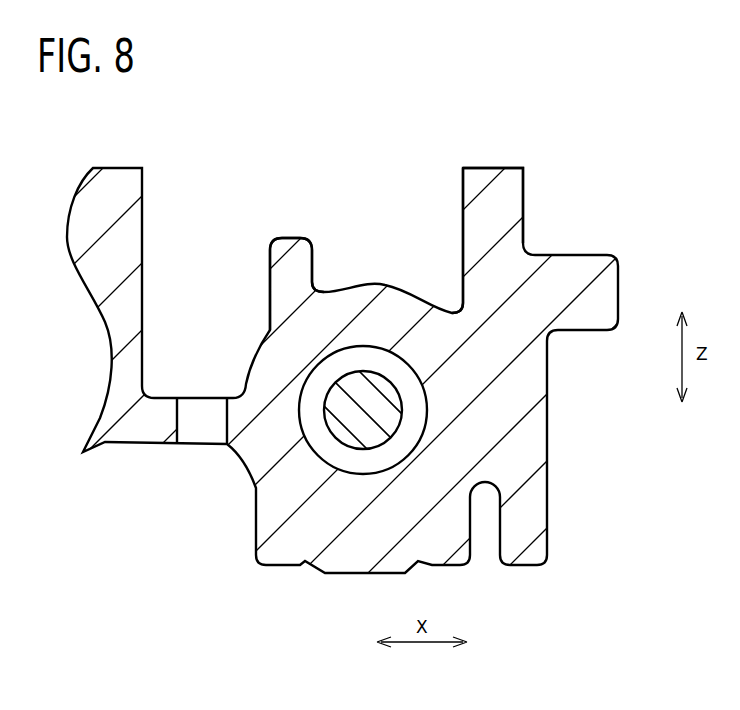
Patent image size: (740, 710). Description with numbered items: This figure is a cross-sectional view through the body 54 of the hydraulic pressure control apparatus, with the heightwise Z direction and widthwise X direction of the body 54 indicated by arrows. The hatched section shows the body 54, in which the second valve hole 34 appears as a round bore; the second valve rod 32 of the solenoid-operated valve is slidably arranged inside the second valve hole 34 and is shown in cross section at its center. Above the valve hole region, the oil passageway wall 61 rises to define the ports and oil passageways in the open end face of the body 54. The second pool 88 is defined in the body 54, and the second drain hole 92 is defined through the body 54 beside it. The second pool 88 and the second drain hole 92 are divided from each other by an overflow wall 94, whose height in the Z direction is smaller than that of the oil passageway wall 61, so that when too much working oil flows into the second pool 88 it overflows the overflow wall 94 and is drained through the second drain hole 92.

The second valve rod 32 is at (348, 407).
The second valve hole 34 is at (381, 468).
The body 54 is at (532, 432).
The oil passageway wall 61 is at (492, 188).
The second pool 88 is at (463, 200).
The second drain hole 92 is at (178, 418).
The overflow wall 94 is at (287, 255).